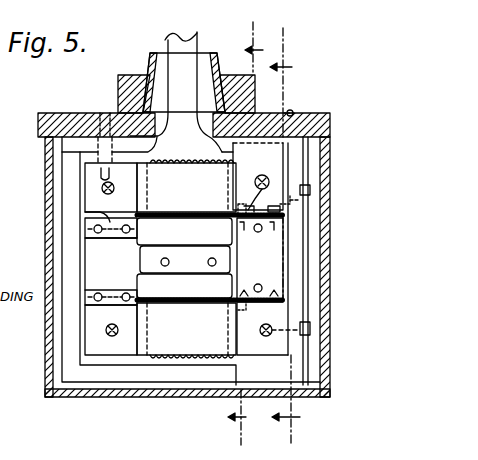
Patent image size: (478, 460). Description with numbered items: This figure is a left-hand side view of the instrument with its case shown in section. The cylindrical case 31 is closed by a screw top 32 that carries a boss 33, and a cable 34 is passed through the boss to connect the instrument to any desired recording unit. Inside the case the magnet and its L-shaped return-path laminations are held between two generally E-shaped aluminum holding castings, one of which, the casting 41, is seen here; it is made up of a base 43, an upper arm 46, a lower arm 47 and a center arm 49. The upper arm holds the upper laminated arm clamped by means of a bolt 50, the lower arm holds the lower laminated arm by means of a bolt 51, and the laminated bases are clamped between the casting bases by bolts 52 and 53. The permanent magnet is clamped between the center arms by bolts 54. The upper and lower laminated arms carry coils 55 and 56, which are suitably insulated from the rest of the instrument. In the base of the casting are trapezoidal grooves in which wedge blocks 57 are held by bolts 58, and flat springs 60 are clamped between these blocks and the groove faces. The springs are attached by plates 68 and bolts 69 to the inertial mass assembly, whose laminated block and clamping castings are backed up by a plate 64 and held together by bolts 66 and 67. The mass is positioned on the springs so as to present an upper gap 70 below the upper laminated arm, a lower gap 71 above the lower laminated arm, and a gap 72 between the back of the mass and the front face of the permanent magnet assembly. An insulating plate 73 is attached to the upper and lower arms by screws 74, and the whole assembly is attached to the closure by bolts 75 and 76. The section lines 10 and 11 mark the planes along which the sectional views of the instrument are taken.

The section line 10— 10 is at (284, 240).
The section line 11— 11 is at (245, 233).
The cylindrical case 31 is at (47, 264).
The screw top 32 is at (118, 84).
The boss 33 is at (152, 57).
The cable 34 is at (176, 81).
The E-shaped holding casting 41 is at (79, 198).
The base of the casting 43 is at (137, 200).
The upper arm of the casting 46 is at (186, 187).
The lower arm of the casting 47 is at (186, 329).
The center arm of the casting 49 is at (185, 261).
The bolt 50 is at (260, 249).
The bolt 51 is at (268, 300).
The bolt 52 is at (104, 187).
The bolt 53 is at (108, 331).
The bolts 54 is at (213, 258).
The coil 55 is at (198, 158).
The coil 56 is at (175, 364).
The wedge block 57 is at (100, 219).
The bolts 58 is at (96, 229).
The flat spring 60 is at (156, 232).
The plate 64 is at (260, 260).
The bolt 66 is at (263, 229).
The bolt 67 is at (263, 288).
The plate 68 is at (298, 202).
The bolts 69 is at (236, 208).
The upper gap 70 is at (275, 190).
The lower gap 71 is at (236, 384).
The gap 72 is at (260, 304).
The insulating plate 73 is at (300, 257).
The screws 74 is at (310, 186).
The bolt 75 is at (100, 112).
The bolt 76 is at (289, 110).